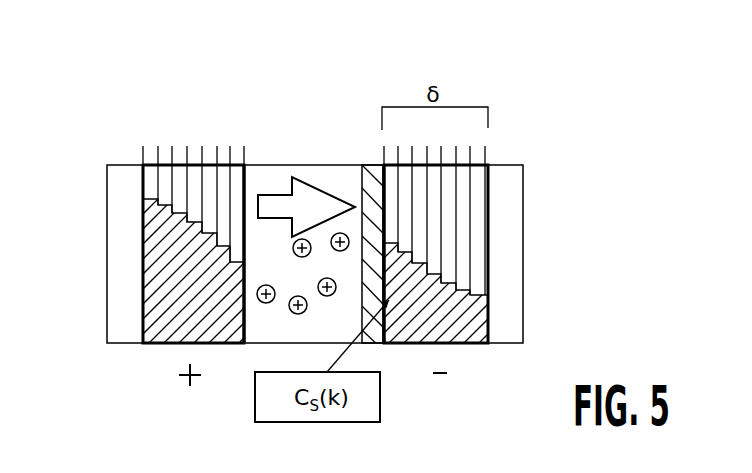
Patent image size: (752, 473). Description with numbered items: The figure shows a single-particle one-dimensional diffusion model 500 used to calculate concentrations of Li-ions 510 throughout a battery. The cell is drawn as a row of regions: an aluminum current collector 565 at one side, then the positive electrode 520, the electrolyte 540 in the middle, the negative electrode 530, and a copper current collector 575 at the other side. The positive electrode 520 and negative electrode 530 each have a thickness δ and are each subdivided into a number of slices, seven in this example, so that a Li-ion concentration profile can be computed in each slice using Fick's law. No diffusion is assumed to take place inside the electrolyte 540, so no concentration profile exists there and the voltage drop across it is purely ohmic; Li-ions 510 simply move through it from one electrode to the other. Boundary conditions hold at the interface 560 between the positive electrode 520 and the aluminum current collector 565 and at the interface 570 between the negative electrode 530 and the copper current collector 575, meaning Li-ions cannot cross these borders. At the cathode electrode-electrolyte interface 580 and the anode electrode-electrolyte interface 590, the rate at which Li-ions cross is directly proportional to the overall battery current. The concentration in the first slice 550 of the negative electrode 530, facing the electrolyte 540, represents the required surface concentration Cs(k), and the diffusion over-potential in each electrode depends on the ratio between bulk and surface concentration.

The single-particle one-dimensional diffusion model 500 is at (555, 92).
The Li-ions 510 is at (282, 185).
The positive electrode 520 is at (162, 367).
The negative electrode 530 is at (465, 365).
The electrolyte 540 is at (271, 322).
The first slice of the negative electrode 550 is at (391, 155).
The interface between the positive electrode and the aluminum current collector 560 is at (140, 197).
The aluminum current collector 565 is at (117, 316).
The interface between the negative electrode and the copper current collector 570 is at (492, 182).
The copper current collector 575 is at (512, 313).
The cathode electrode-electrolyte interface 580 is at (250, 185).
The anode electrode-electrolyte interface 590 is at (377, 211).